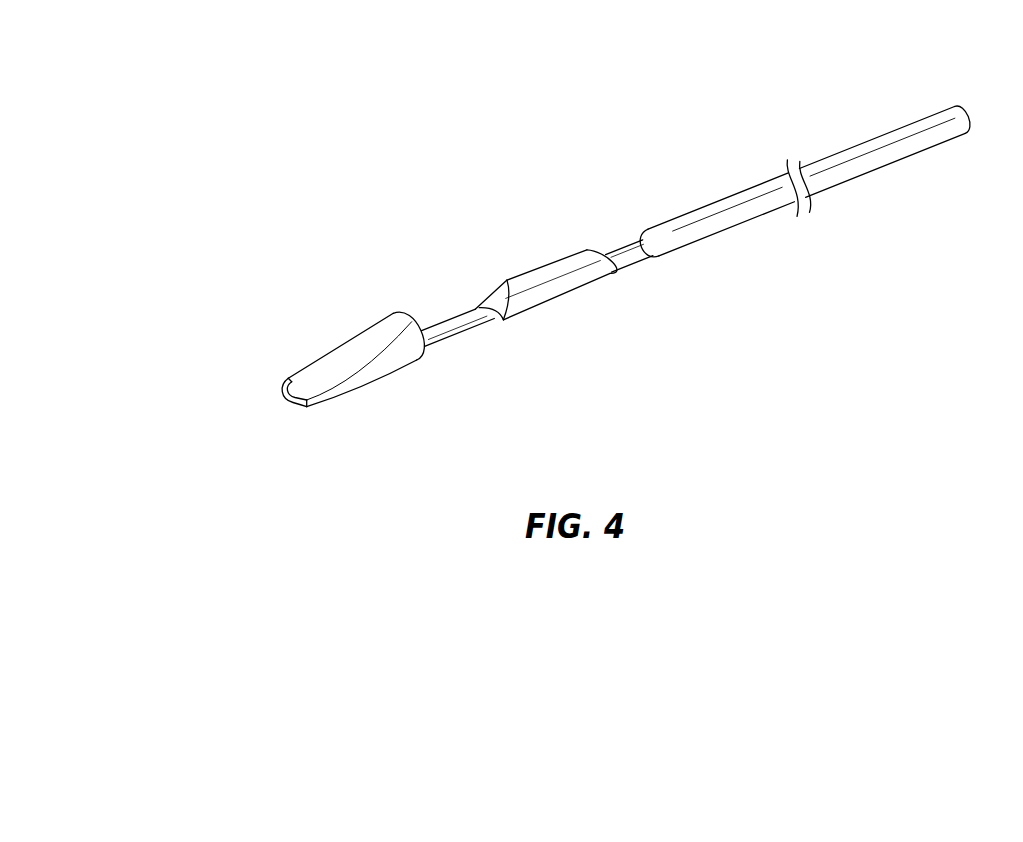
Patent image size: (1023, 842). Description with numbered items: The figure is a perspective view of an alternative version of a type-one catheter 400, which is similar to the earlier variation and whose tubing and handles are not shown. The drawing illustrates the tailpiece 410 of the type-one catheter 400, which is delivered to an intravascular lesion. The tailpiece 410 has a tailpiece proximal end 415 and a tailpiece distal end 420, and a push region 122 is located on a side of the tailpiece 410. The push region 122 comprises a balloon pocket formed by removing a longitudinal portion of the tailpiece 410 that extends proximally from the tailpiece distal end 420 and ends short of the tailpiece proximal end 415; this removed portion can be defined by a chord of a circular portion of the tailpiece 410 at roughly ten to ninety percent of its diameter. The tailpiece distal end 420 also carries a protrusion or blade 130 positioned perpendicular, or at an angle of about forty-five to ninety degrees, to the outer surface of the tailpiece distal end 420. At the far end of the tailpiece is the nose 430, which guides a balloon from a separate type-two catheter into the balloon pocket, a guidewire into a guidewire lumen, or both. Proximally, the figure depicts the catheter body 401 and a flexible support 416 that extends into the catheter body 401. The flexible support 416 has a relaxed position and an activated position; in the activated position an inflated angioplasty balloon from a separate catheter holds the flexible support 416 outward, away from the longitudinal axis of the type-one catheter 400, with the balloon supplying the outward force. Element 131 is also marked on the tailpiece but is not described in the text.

The type-1 catheter 400 is at (408, 98).
The tailpiece 410 is at (313, 221).
The nose 430 is at (313, 352).
The push region 122 is at (490, 332).
The tailpiece distal end 420 is at (480, 341).
The protrusion or blade 130 is at (496, 292).
The hub 131 is at (535, 262).
The tailpiece proximal end 415 is at (634, 260).
The catheter body 401 is at (840, 186).
The flexible support 416 is at (622, 246).